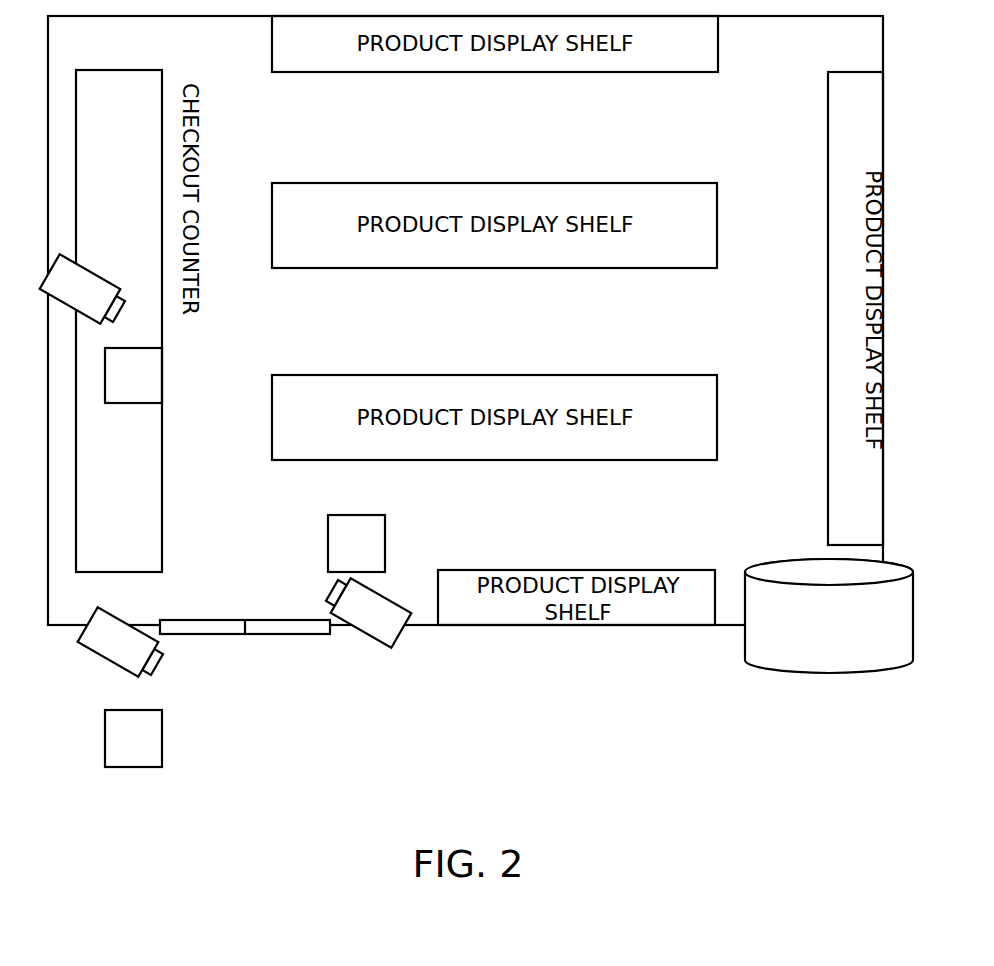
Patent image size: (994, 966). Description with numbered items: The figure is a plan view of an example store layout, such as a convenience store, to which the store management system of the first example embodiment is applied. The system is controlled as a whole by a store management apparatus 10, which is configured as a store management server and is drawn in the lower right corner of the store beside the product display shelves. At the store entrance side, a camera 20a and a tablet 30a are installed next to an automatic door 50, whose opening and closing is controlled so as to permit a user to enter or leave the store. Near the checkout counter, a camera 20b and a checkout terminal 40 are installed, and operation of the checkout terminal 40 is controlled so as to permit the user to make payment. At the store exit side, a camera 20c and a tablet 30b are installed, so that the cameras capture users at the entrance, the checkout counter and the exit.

The store management apparatus 10 is at (787, 572).
The camera 20a is at (103, 662).
The camera 20b is at (90, 267).
The camera 20c is at (360, 627).
The tablet 30a is at (132, 767).
The tablet 30b is at (385, 527).
The checkout terminal 40 is at (134, 403).
The automatic door 50 is at (287, 635).